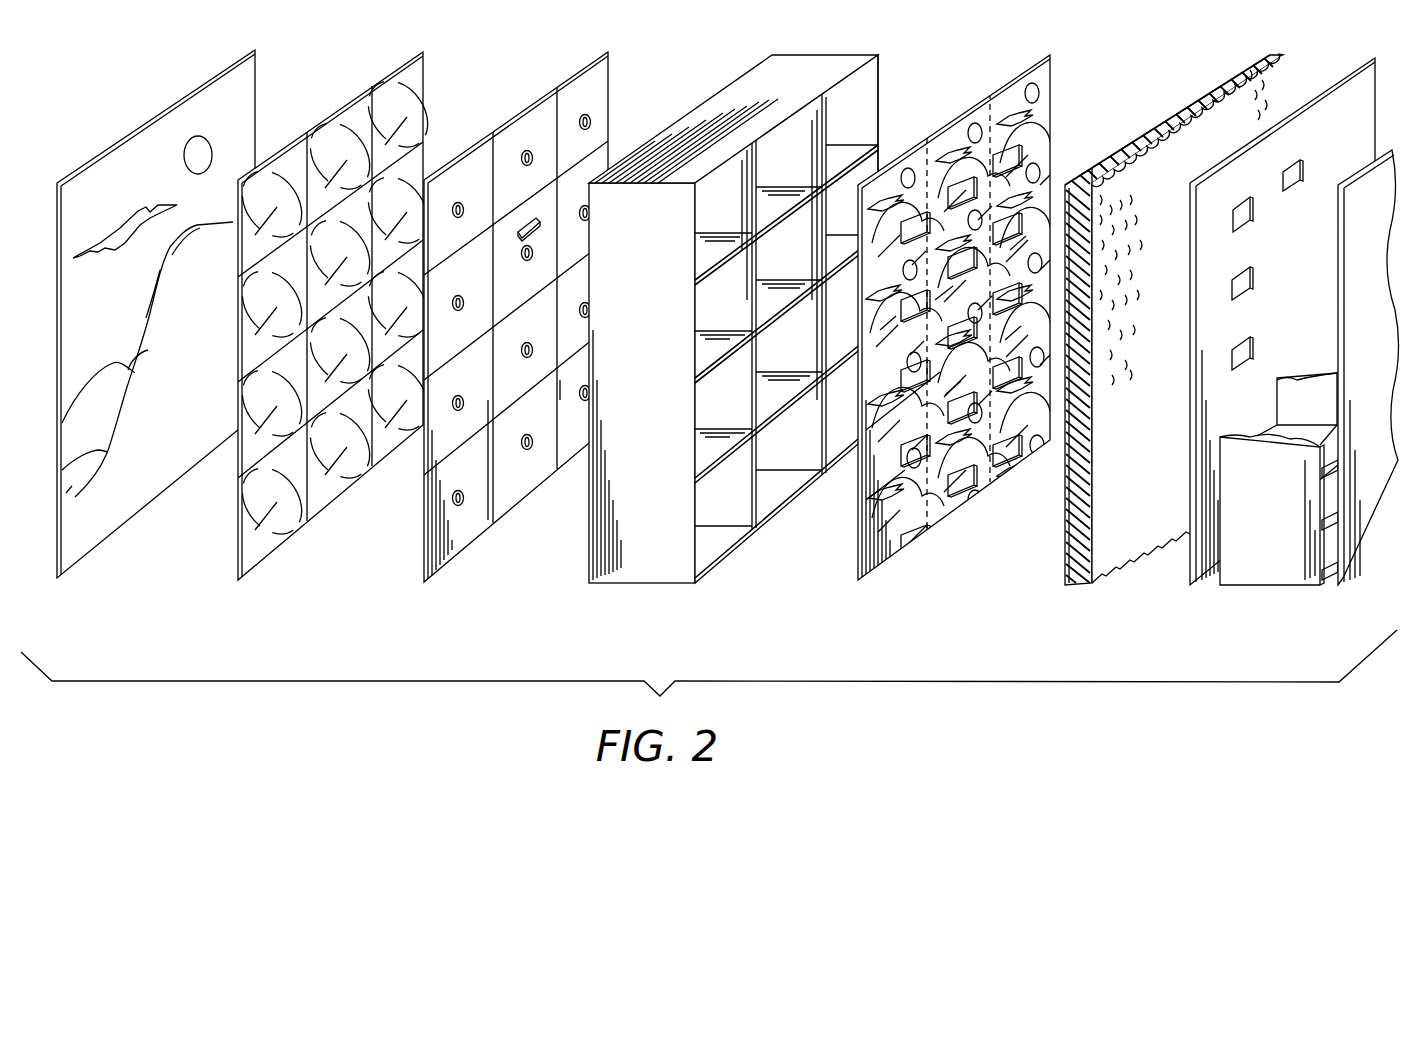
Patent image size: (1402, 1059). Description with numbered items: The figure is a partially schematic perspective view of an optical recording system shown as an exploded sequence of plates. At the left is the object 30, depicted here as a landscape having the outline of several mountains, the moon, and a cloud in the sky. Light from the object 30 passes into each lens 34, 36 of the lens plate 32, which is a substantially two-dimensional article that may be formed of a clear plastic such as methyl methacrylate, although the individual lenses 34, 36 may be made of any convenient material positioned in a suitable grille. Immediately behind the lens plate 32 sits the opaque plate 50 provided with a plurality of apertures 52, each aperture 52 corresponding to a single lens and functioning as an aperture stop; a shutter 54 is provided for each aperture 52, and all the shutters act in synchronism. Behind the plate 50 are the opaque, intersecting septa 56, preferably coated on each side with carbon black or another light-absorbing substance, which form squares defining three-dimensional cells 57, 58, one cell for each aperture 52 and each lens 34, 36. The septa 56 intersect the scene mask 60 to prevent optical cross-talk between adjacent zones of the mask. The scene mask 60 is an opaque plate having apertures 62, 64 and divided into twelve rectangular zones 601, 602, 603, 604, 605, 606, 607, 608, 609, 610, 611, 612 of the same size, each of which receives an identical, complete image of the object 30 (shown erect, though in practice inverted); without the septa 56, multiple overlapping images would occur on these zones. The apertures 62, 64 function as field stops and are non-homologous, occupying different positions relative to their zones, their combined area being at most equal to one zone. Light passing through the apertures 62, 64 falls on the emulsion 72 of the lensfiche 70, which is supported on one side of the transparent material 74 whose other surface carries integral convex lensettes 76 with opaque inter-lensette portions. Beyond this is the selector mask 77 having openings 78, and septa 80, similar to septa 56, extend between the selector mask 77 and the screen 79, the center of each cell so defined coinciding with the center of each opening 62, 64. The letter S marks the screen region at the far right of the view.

The object 30 is at (131, 128).
The lens plate 32 is at (327, 105).
The lens 34 is at (250, 253).
The lens 36 is at (252, 330).
The opaque plate 50 is at (516, 314).
The aperture 52 is at (546, 134).
The shutter 54 is at (538, 240).
The septa 56 is at (733, 347).
The cell 57 is at (702, 405).
The cell 58 is at (708, 503).
The scene mask 60 is at (998, 325).
The aperture 62 is at (932, 264).
The aperture 64 is at (926, 300).
The rectangular zone 601 is at (900, 178).
The rectangular zone 602 is at (856, 318).
The rectangular zone 603 is at (838, 440).
The rectangular zone 604 is at (860, 527).
The rectangular zone 605 is at (955, 142).
The rectangular zone 606 is at (985, 210).
The rectangular zone 607 is at (944, 360).
The rectangular zone 608 is at (956, 440).
The rectangular zone 609 is at (1052, 100).
The rectangular zone 610 is at (1050, 172).
The rectangular zone 611 is at (1074, 304).
The rectangular zone 612 is at (1031, 406).
The lensfiche 70 is at (1144, 339).
The emulsion 72 is at (1062, 544).
The transparent material 74 is at (1134, 142).
The convex lensettes 76 is at (1155, 200).
The selector mask 77 is at (1282, 310).
The opening 78 is at (1290, 177).
The screen 79 is at (1357, 382).
The septa 80 is at (1288, 578).
The support surface S is at (1356, 264).